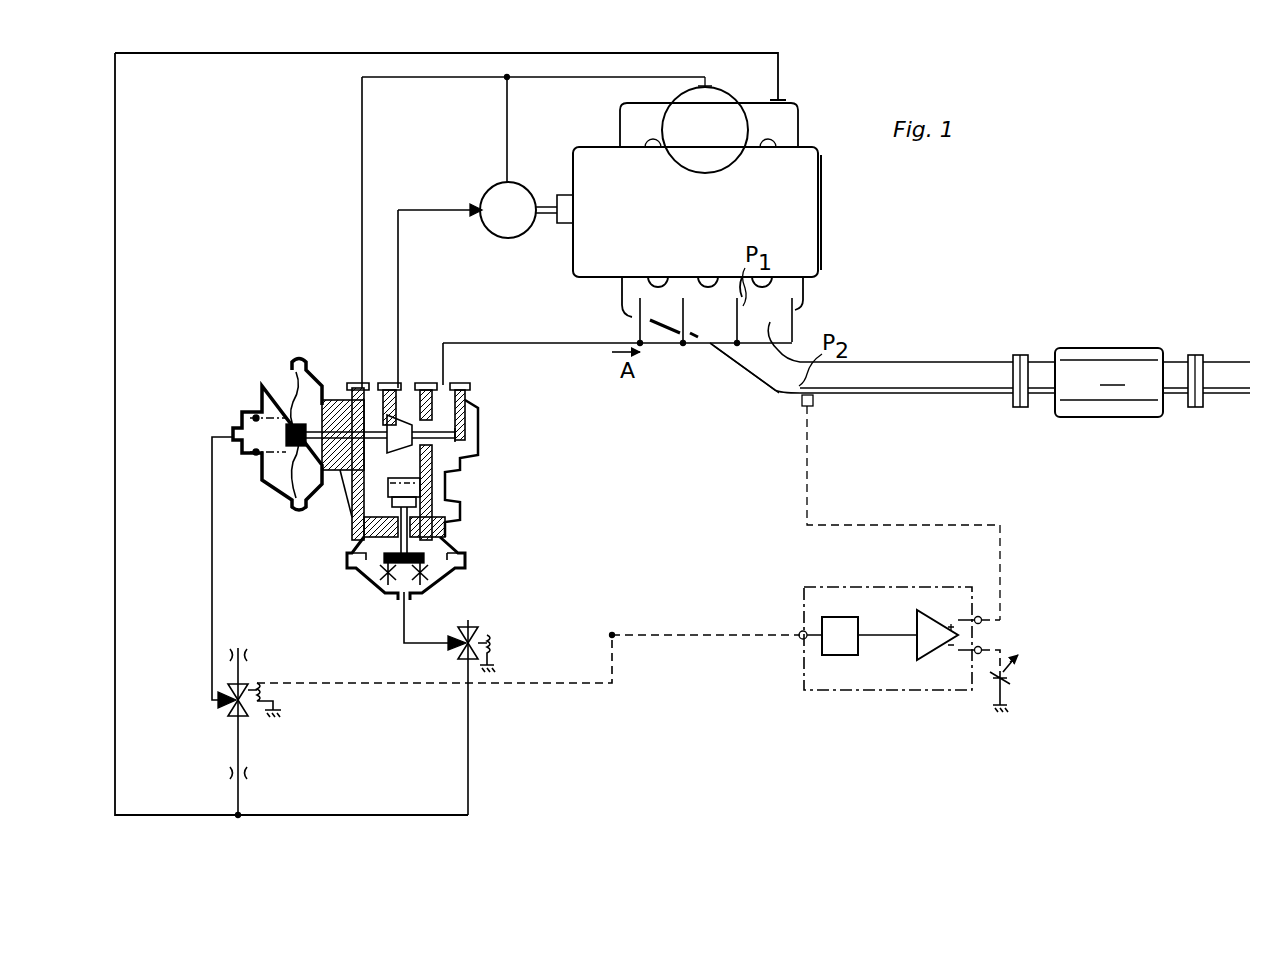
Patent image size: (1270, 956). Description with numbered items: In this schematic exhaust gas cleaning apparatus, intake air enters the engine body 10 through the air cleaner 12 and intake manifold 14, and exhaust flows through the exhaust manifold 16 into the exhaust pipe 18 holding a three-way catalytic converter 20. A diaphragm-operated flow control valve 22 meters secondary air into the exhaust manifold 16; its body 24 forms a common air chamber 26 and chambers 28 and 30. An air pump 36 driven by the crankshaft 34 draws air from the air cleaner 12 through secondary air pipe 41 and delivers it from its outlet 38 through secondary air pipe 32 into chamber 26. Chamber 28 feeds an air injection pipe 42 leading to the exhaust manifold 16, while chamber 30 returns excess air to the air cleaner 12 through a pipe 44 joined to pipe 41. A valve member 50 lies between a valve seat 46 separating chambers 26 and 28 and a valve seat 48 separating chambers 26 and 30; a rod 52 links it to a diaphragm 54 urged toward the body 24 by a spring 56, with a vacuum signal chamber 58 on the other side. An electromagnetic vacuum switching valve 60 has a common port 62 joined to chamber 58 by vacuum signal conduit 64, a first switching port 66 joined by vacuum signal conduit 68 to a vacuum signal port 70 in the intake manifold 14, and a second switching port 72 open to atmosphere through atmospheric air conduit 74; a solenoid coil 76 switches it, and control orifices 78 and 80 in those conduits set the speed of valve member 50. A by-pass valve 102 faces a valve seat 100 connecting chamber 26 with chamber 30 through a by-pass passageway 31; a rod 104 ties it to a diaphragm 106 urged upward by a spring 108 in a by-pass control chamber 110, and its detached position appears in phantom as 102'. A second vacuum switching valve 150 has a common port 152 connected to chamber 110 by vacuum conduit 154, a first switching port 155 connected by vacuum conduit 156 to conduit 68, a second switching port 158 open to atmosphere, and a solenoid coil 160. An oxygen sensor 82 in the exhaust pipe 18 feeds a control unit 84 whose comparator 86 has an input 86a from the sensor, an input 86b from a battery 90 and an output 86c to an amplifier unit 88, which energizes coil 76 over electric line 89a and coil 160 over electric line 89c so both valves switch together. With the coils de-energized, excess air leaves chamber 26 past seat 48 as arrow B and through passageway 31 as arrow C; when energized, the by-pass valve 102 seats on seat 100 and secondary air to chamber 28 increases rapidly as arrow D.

The engine body 10 is at (818, 190).
The air cleaner 12 is at (720, 165).
The intake manifold 14 is at (798, 125).
The exhaust manifold 16 is at (807, 290).
The exhaust pipe 18 is at (910, 362).
The three-way catalytic converter 20 is at (1110, 348).
The flow control valve 22 is at (400, 513).
The body 24 is at (440, 480).
The common air chamber 26 is at (410, 405).
The air chamber 28 is at (452, 394).
The air chamber 30 is at (343, 468).
The by-pass passageway 31 is at (348, 565).
The secondary air pipe 32 is at (392, 291).
The crankshaft 34 is at (549, 214).
The air pump 36 is at (499, 242).
The outlet 38 is at (473, 215).
The secondary air pipe 41 is at (507, 121).
The air injection pipe 42 is at (562, 345).
The pipe 44 is at (362, 131).
The valve seat 46 is at (478, 420).
The valve seat 48 is at (376, 392).
The valve member 50 is at (465, 460).
The rod 52 is at (337, 395).
The diaphragm 54 is at (268, 380).
The spring 56 is at (256, 405).
The vacuum signal chamber 58 is at (264, 496).
The vacuum switching valve 60 is at (226, 712).
The common port 62 is at (218, 700).
The vacuum signal conduit 64 is at (212, 594).
The first switching port 66 is at (245, 714).
The vacuum signal conduit 68 is at (238, 801).
The vacuum signal port 70 is at (778, 100).
The second switching port 72 is at (245, 685).
The atmospheric air conduit 74 is at (238, 672).
The solenoid coil 76 is at (262, 718).
The control orifice 78 is at (253, 776).
The control orifice 80 is at (247, 654).
The air-fuel ratio sensor 82 is at (815, 406).
The control unit 84 is at (935, 653).
The comparator 86 is at (930, 619).
The input 86a is at (983, 614).
The input 86b is at (994, 656).
The output 86c is at (892, 635).
The amplifier unit 88 is at (840, 617).
The electric line 89a is at (720, 638).
The electric line 89c is at (612, 635).
The battery 90 is at (1005, 678).
The valve seat 100 is at (445, 516).
The by-pass valve 102 is at (485, 495).
The phantom lines 102' is at (489, 476).
The rod 104 is at (455, 549).
The diaphragm 106 is at (453, 575).
The spring 108 is at (443, 588).
The by-pass control chamber 110 is at (379, 582).
The vacuum switching valve 150 is at (445, 645).
The common port 152 is at (462, 648).
The vacuum conduit 154 is at (404, 625).
The first switching port 155 is at (482, 665).
The vacuum conduit 156 is at (468, 744).
The second switching port 158 is at (464, 633).
The solenoid coil 160 is at (493, 635).
The arrow B is at (352, 400).
The arrow C is at (353, 530).
The arrow D is at (478, 445).